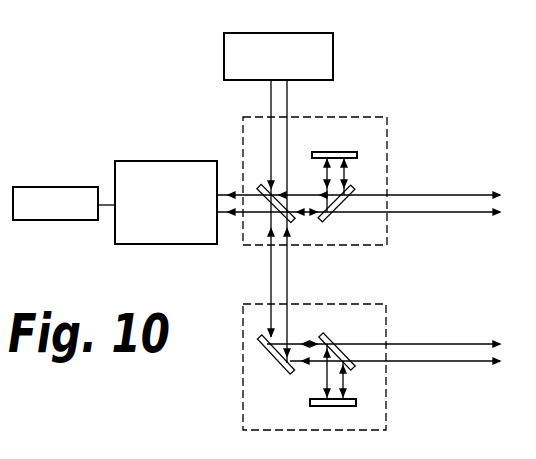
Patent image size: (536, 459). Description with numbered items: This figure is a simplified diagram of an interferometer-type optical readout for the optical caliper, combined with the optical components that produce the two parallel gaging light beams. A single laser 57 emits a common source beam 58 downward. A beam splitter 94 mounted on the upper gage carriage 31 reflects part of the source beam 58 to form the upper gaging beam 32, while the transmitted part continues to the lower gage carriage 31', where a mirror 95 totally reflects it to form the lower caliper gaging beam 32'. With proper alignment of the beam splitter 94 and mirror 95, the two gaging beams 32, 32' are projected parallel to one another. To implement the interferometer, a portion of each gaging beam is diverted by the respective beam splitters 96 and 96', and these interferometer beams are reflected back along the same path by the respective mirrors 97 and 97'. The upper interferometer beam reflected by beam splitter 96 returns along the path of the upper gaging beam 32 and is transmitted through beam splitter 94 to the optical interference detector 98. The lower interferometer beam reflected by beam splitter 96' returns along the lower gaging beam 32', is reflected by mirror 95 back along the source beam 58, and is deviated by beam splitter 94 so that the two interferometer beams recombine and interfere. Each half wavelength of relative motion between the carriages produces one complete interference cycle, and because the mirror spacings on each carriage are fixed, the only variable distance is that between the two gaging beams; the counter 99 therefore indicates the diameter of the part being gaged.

The laser 57 is at (334, 59).
The common source beam 58 is at (282, 101).
The upper gage carriage 31 is at (287, 163).
The lower gage carriage 31' is at (343, 358).
The beam splitter 94 is at (268, 200).
The mirror 95 is at (255, 343).
The beam splitter 96 is at (377, 215).
The beam splitter 96' is at (352, 319).
The mirror 97 is at (375, 164).
The mirror 97' is at (379, 383).
The upper gaging beam 32 is at (359, 188).
The lower caliper gaging beam 32' is at (383, 335).
The optical interference detector 98 is at (165, 161).
The counter 99 is at (63, 187).